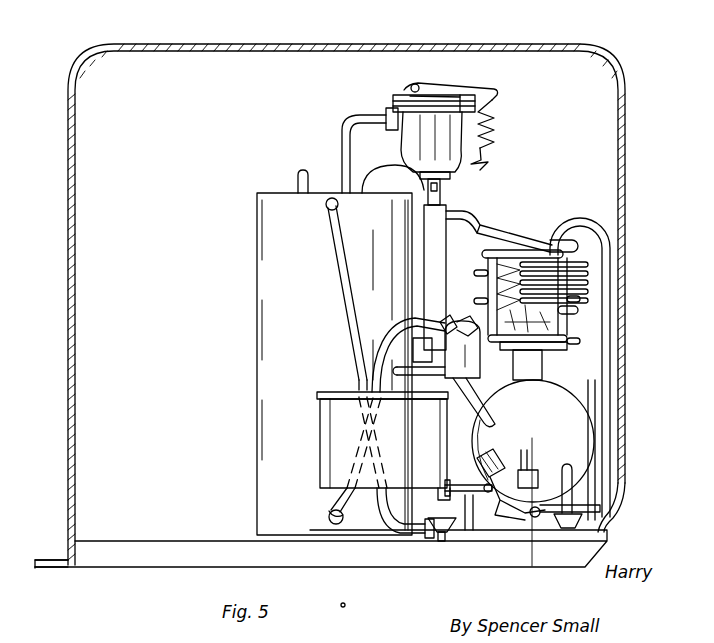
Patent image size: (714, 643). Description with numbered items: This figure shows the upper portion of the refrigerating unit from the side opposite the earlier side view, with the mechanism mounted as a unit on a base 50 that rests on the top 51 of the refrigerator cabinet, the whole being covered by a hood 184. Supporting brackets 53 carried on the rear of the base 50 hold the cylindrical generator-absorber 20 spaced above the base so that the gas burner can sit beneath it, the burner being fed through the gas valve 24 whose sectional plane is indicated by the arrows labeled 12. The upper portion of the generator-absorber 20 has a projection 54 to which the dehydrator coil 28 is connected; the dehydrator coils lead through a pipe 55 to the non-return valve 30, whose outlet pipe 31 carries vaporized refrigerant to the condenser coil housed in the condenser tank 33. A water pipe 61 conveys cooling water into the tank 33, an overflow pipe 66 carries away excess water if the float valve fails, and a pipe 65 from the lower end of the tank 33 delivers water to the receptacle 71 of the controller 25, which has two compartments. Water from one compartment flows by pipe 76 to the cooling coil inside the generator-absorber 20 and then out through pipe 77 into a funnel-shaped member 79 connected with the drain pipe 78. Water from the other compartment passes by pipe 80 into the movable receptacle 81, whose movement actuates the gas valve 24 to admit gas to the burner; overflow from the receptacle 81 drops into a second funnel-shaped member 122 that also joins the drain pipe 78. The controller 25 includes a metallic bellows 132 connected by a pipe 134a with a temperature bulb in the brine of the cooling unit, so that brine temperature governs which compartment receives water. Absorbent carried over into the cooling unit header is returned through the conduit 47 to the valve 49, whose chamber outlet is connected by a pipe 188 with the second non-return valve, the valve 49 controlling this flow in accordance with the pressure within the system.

The hood 184 is at (68, 140).
The base 50 is at (143, 541).
The top of refrigerator cabinet 51 is at (40, 560).
The condenser tank 33 is at (257, 280).
The water pipe 61 is at (298, 175).
The conduit 47 is at (342, 128).
The valve 49 is at (398, 98).
The pipe 31 is at (388, 170).
The pipe 188 is at (440, 196).
The non-return valve 30 is at (446, 255).
The pipe 55 is at (474, 224).
The dehydrator coil 28 is at (522, 236).
The pipe 134a is at (590, 218).
The supporting brackets 53 is at (595, 497).
The metallic bellows 132 is at (595, 300).
The controller 25 is at (566, 336).
The projection 54 is at (542, 372).
The generator-absorber 20 is at (594, 412).
The pipe 80 is at (434, 380).
The pipe 76 is at (496, 418).
The pipe 65 is at (396, 332).
The receptacle 71 is at (452, 318).
The overflow pipe 66 is at (332, 263).
The movable receptacle 81 is at (320, 445).
The funnel-shaped member 122 is at (442, 534).
The drain pipe 78 is at (496, 532).
The gas valve 24 is at (486, 458).
The pipe 77 is at (572, 486).
The funnel-shaped member 79 is at (598, 522).
The center line 12 is at (540, 455).